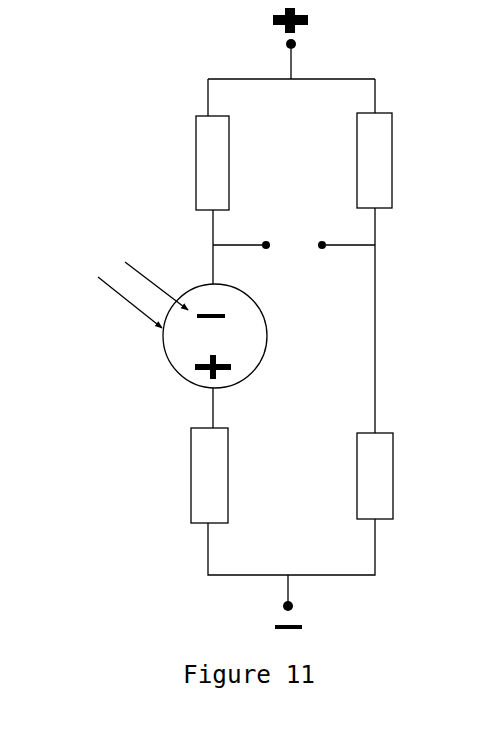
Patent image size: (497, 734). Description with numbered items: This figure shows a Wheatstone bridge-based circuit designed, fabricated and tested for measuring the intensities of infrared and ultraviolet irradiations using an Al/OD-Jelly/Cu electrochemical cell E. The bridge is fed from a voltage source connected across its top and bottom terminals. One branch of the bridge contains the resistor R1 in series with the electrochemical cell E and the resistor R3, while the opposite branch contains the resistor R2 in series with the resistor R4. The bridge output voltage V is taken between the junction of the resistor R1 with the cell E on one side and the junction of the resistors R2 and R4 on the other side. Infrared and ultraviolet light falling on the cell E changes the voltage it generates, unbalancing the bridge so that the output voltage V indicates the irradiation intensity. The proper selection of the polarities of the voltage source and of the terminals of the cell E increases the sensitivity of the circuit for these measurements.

The bridge resistor R1 is at (182, 163).
The bridge resistor R2 is at (411, 160).
The bridge resistor R3 is at (177, 475).
The bridge resistor R4 is at (408, 476).
The bridge output voltage V is at (294, 226).
The Al/OD-Jelly/Cu electrochemical cell E is at (189, 336).